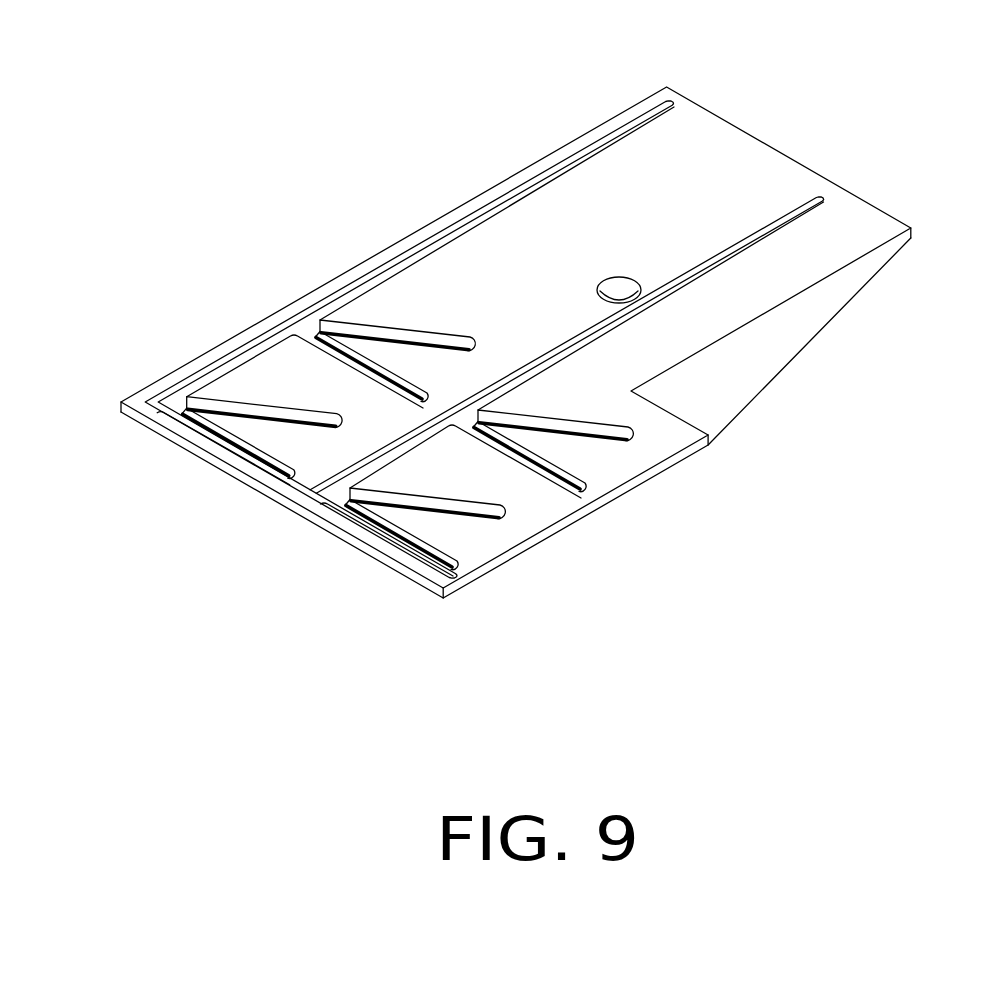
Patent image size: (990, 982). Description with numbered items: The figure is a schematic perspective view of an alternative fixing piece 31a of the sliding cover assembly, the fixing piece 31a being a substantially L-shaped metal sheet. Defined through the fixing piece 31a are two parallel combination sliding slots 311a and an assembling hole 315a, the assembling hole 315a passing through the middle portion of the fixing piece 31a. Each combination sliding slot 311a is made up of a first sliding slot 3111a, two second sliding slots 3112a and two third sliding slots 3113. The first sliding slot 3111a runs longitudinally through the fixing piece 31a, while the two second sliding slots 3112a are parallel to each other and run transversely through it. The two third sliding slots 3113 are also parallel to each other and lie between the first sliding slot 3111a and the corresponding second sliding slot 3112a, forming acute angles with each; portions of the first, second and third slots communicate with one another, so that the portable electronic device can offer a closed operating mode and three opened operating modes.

The fixing piece 31a is at (300, 265).
The combination sliding slot 311a is at (849, 494).
The first sliding slot 3111a is at (670, 288).
The second sliding slot 3112a is at (555, 470).
The third sliding slot 3113 is at (598, 428).
The assembling hole 315a is at (623, 287).